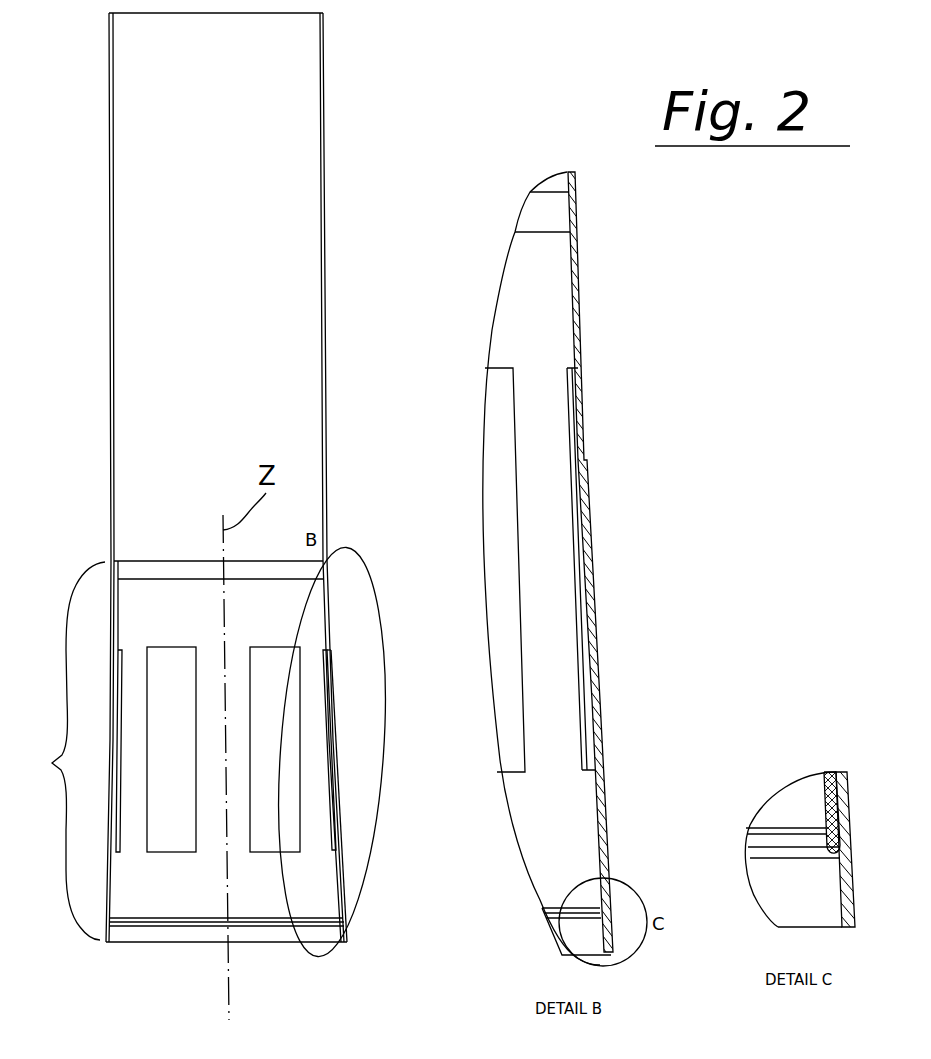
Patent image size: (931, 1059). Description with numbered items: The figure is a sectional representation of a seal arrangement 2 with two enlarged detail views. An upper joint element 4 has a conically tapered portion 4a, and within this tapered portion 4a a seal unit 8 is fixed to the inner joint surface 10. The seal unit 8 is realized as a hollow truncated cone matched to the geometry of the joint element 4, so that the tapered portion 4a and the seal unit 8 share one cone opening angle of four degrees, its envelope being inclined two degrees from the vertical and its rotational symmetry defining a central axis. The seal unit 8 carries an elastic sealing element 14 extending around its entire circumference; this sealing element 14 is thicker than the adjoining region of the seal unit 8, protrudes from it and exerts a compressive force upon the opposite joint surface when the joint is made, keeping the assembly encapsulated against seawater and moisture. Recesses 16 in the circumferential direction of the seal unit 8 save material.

The seal arrangement 2 is at (350, 467).
The upper joint element 4 is at (323, 142).
The tapered portion 4a is at (179, 751).
The seal unit 8 is at (307, 612).
The inner joint surface 10 is at (828, 790).
The elastic sealing element 14 is at (280, 925).
The recesses 16 is at (115, 725).